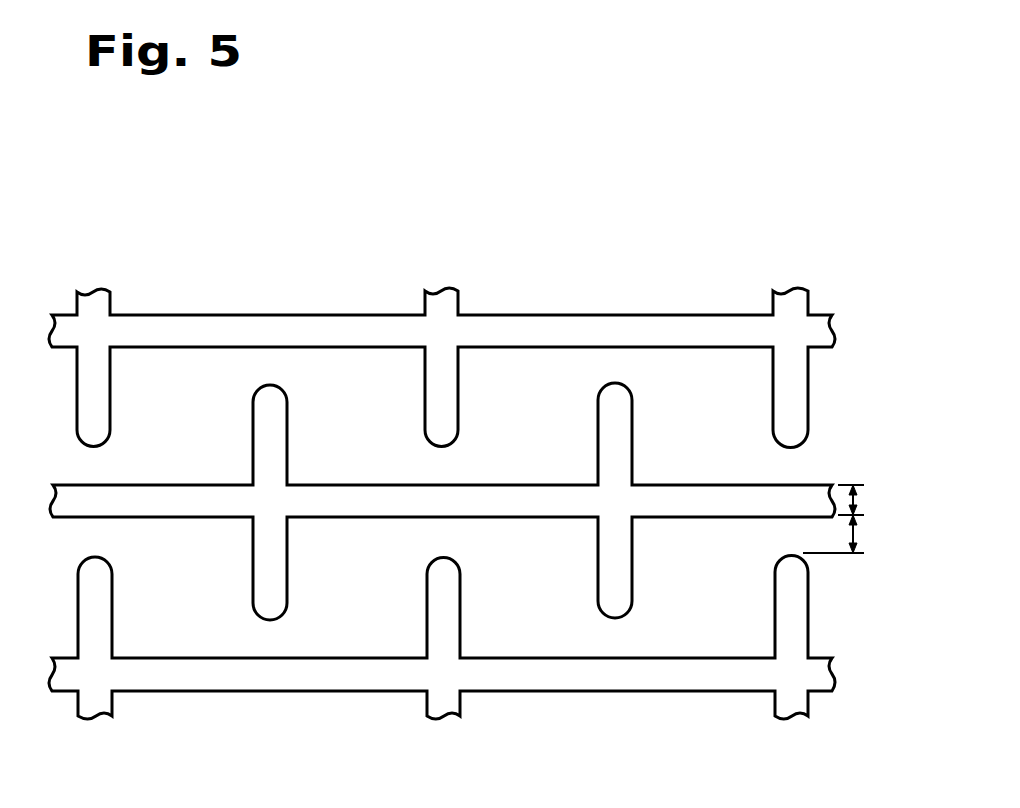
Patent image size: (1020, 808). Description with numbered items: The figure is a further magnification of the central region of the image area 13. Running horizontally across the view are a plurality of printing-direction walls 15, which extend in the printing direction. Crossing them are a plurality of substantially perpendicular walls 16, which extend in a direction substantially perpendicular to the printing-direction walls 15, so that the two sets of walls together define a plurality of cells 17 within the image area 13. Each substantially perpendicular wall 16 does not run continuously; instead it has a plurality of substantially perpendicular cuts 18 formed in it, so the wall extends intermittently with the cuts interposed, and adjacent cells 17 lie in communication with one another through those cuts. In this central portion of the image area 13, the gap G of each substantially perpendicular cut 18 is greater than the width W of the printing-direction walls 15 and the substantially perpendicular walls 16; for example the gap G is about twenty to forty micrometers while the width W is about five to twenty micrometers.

The image area 13 is at (84, 258).
The printing-direction walls 15 is at (534, 323).
The substantially perpendicular walls 16 is at (607, 565).
The cells 17 is at (345, 418).
The substantially perpendicular cuts 18 is at (616, 367).
The width W is at (862, 504).
The gap G is at (860, 538).